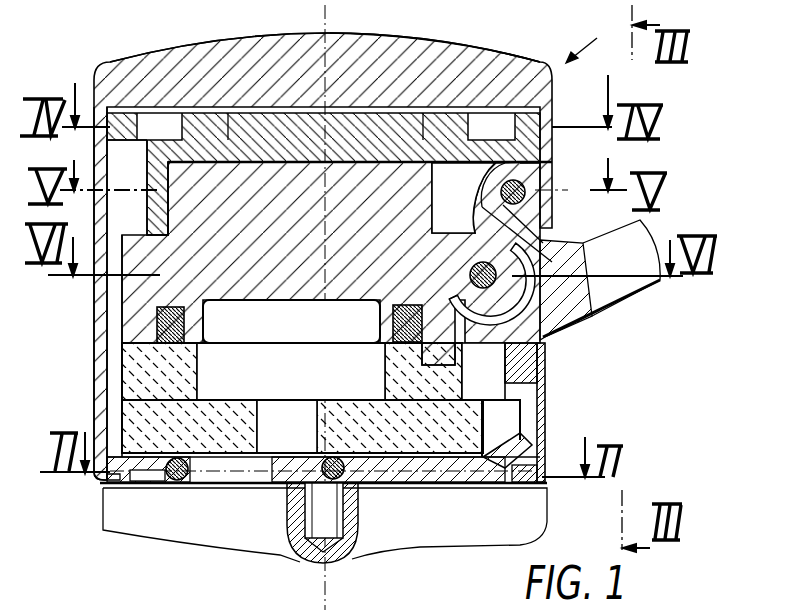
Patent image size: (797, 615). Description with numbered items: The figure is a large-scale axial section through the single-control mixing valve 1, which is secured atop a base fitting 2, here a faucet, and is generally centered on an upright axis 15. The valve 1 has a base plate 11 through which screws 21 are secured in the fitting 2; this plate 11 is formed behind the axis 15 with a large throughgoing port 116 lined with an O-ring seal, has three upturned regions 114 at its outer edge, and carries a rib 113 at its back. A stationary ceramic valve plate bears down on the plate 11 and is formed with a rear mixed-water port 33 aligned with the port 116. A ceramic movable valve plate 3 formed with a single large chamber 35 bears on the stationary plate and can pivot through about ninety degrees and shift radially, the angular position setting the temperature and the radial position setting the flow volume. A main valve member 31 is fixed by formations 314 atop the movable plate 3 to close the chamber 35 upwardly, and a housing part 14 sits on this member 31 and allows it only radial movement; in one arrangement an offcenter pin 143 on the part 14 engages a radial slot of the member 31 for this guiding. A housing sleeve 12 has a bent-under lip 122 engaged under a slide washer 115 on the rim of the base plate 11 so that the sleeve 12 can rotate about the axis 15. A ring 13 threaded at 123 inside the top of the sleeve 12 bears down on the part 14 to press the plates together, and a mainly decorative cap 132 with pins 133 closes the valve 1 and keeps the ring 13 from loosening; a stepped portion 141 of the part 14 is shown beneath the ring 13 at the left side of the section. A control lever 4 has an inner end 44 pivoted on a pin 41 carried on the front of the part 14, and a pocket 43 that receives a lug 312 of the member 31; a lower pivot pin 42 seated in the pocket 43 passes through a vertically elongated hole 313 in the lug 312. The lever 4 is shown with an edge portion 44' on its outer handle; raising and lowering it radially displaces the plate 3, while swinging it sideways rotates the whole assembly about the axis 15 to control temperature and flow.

The single-control mixing valve 1 is at (588, 44).
The base fitting 2 is at (535, 533).
The movable valve plate 3 is at (388, 378).
The control lever 4 is at (641, 287).
The base plate 11 is at (433, 474).
The housing sleeve 12 is at (107, 363).
The ring 13 is at (200, 117).
The housing part 14 is at (478, 73).
The upright axis 15 is at (327, 32).
The screws 21 is at (328, 525).
The main valve member 31 is at (137, 293).
The rear mixed-water port 33 is at (262, 415).
The chamber 35 is at (257, 355).
The pin 41 is at (527, 193).
The pivot pin 42 is at (548, 252).
The pocket 43 is at (480, 212).
The inner end 44 is at (559, 153).
The lever handle edge 44' is at (605, 336).
The rib 113 is at (128, 486).
The upturned regions 114 is at (540, 438).
The slide washer 115 is at (100, 483).
The throughgoing hole or port 116 is at (262, 484).
The bent-under lip 122 is at (536, 490).
The thread 123 is at (98, 143).
The cover or cap 132 is at (248, 52).
The pins 133 is at (398, 38).
The step of seal carrier 141 is at (150, 208).
The offcenter pin 143 is at (545, 362).
The lug 312 is at (505, 247).
The vertically elongated hole 313 is at (546, 347).
The formations 314 is at (458, 350).